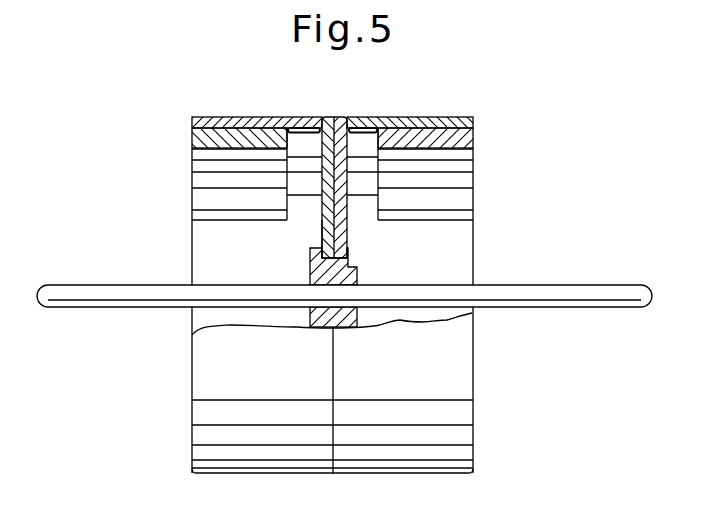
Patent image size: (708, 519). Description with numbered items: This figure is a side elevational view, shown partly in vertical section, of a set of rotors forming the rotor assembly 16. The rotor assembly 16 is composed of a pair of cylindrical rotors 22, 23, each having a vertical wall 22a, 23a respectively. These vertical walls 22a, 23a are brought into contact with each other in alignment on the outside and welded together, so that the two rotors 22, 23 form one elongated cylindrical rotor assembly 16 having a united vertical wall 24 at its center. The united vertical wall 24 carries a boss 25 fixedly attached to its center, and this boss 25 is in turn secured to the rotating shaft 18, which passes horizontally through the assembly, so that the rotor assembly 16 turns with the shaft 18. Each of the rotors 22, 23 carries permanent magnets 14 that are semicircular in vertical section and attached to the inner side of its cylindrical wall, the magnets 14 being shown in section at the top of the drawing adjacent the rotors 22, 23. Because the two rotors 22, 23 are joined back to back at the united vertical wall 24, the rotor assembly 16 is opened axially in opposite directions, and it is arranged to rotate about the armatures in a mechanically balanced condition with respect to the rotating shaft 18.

The permanent magnet 14 is at (192, 133).
The rotor assembly 16 is at (341, 113).
The rotating shaft 18 is at (101, 284).
The cylindrical rotor 22 is at (248, 117).
The vertical wall 22a is at (378, 127).
The cylindrical rotor 23 is at (437, 117).
The vertical wall 23a is at (295, 126).
The united vertical wall 24 is at (320, 221).
The boss 25 is at (310, 270).